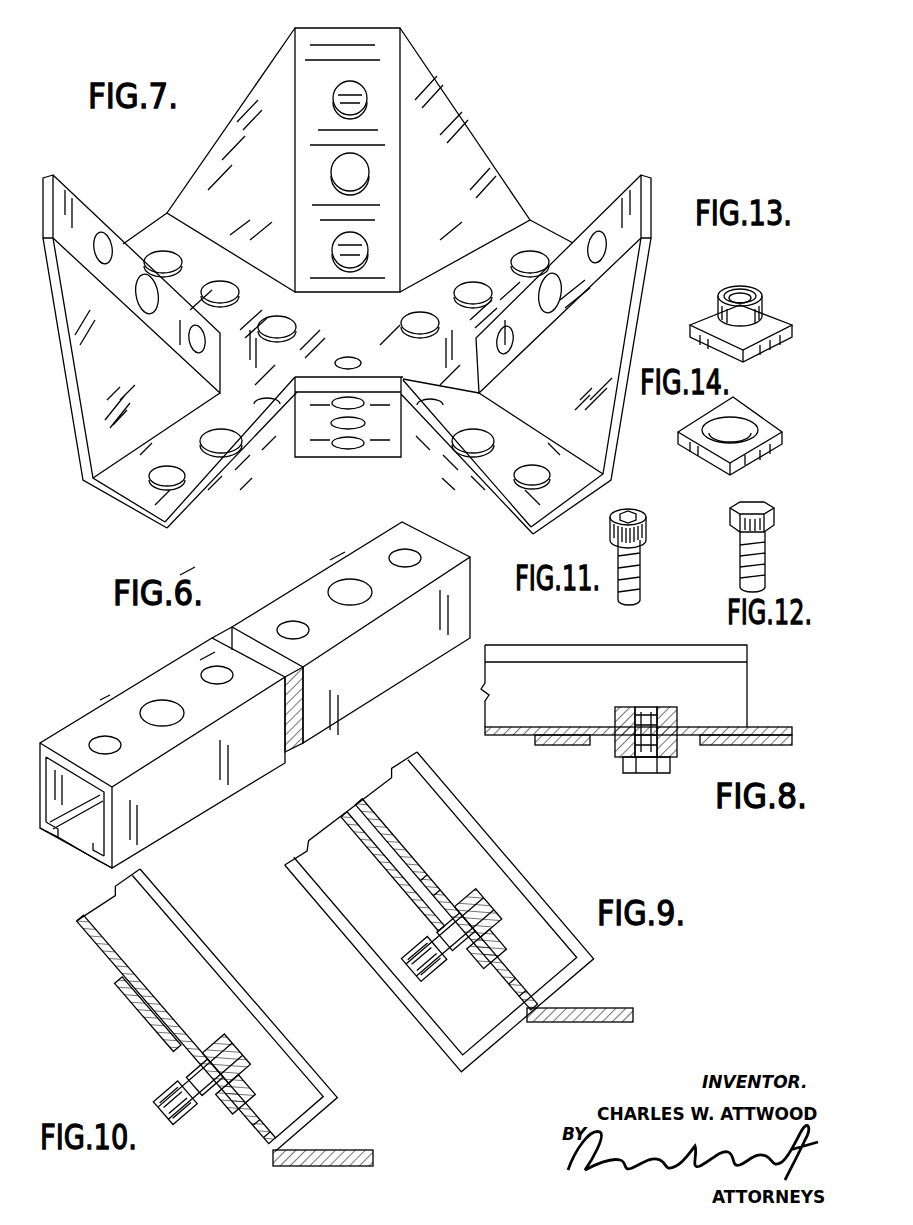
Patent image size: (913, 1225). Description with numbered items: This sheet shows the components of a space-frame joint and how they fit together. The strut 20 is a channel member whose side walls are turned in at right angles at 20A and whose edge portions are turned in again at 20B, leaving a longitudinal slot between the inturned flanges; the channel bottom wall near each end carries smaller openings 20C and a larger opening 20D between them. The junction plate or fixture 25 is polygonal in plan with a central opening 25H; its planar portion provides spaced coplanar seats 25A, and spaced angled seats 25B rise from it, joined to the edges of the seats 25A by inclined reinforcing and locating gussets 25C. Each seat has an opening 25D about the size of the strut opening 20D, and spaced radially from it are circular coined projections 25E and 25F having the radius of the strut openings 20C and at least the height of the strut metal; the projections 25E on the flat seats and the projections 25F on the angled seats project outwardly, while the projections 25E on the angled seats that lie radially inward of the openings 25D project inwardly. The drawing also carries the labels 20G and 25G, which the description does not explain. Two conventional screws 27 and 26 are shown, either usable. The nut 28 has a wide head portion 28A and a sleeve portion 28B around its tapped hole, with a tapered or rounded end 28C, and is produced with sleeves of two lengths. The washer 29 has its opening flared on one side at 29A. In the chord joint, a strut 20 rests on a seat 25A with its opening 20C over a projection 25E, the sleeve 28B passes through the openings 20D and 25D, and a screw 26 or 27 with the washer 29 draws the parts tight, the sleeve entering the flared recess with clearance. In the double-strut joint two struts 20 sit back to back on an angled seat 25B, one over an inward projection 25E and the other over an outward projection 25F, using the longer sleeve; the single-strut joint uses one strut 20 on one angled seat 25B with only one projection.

In FIG. 6, the strut 20 is at (350, 700).
In FIG. 8, the strut 20 is at (667, 645).
In FIG. 9, the strut 20 is at (527, 885).
In FIG. 10, the strut 20 is at (265, 1025).
In FIG. 6, the inturned side walls 20A is at (42, 840).
In FIG. 6, the inturned edge flanges 20B is at (72, 827).
In FIG. 6, the openings 20C is at (112, 750).
In FIG. 6, the openings 20D is at (145, 710).
In FIG. 6, the hole 20G is at (293, 622).
In FIG. 7, the junction plate 25 is at (360, 349).
In FIG. 7, the coplanar seats 25A is at (348, 345).
In FIG. 8, the coplanar seats 25A is at (772, 735).
In FIG. 7, the angled seats 25B is at (387, 75).
In FIG. 9, the angled seats 25B is at (392, 868).
In FIG. 10, the angled seats 25B is at (145, 1000).
In FIG. 7, the inclined gussets 25C is at (240, 134).
In FIG. 7, the opening 25D is at (333, 174).
In FIG. 7, the circular coined projections 25E is at (177, 268).
In FIG. 8, the circular coined projections 25E is at (583, 727).
In FIG. 7, the circular coined projections 25F is at (345, 92).
In FIG. 9, the circular coined projections 25F is at (398, 888).
In FIG. 7, the small hole 25G is at (368, 250).
In FIG. 9, the small hole 25G is at (518, 985).
In FIG. 10, the small hole 25G is at (255, 1135).
In FIG. 7, the central opening 25H is at (362, 363).
In FIG. 8, the screw 26 is at (647, 773).
In FIG. 9, the screw 26 is at (440, 975).
In FIG. 10, the screw 26 is at (188, 1125).
In FIG. 12, the screw 26 is at (772, 521).
In FIG. 11, the screw 27 is at (648, 536).
In FIG. 9, the nut 28 is at (462, 910).
In FIG. 10, the nut 28 is at (233, 1080).
In FIG. 13, the nut 28 is at (730, 319).
In FIG. 13, the wide head portion 28A is at (690, 322).
In FIG. 13, the sleeve portion 28B is at (772, 316).
In FIG. 13, the tapered sleeve end 28C is at (752, 288).
In FIG. 8, the special washer 29 is at (613, 757).
In FIG. 9, the special washer 29 is at (476, 990).
In FIG. 10, the special washer 29 is at (214, 1118).
In FIG. 14, the special washer 29 is at (729, 441).
In FIG. 14, the flared opening 29A is at (703, 448).